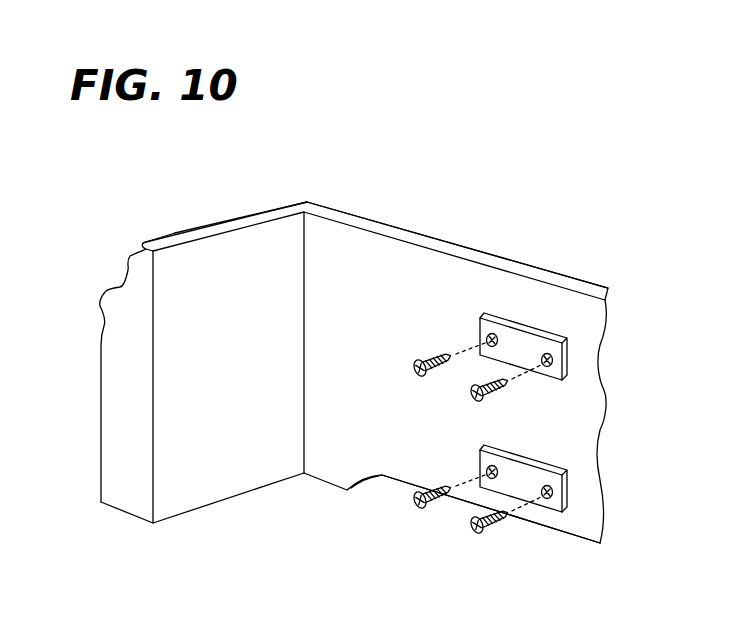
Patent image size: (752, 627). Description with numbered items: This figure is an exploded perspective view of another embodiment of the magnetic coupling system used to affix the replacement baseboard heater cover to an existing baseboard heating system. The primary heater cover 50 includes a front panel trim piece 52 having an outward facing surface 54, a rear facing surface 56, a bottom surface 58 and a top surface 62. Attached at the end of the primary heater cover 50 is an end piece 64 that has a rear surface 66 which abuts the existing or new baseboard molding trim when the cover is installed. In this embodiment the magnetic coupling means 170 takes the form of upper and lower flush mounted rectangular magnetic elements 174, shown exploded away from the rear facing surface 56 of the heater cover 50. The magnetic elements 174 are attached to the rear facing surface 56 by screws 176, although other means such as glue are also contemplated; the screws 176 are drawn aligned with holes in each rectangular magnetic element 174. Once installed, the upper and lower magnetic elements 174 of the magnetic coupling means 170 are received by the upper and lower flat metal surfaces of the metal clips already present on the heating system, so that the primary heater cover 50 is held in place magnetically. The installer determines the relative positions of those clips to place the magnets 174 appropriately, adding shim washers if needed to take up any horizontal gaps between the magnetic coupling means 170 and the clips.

The primary heater cover 50 is at (363, 369).
The front panel trim piece 52 is at (607, 405).
The outward facing surface 54 is at (472, 250).
The rear facing surface 56 is at (587, 498).
The bottom surface 58 is at (123, 510).
The top surface 62 is at (565, 280).
The end pieces 64 is at (173, 237).
The rear surface 66 is at (125, 358).
The magnetic coupling means 170 is at (526, 461).
The magnetic elements 174 is at (567, 343).
The screws 176 is at (470, 392).